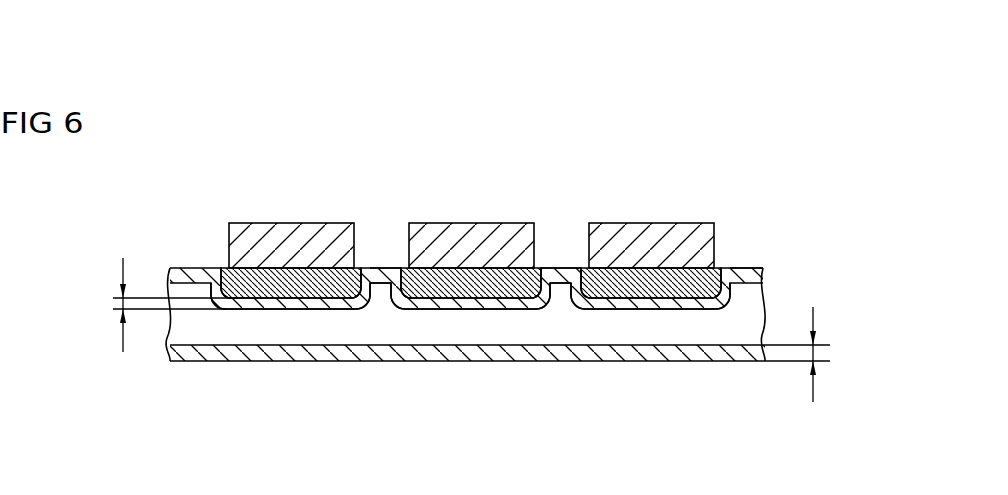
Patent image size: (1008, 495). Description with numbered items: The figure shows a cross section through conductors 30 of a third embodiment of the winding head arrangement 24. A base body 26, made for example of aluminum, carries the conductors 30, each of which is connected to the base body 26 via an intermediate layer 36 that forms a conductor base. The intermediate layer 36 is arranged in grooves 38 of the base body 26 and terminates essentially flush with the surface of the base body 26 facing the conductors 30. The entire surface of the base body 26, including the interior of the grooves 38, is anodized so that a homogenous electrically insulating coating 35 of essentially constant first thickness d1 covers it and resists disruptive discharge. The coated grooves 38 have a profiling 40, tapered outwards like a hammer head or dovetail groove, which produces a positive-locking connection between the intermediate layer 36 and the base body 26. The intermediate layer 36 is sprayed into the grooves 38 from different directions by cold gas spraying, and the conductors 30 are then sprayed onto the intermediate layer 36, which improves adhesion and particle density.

The winding head arrangement 24 is at (764, 250).
The base body 26 is at (768, 290).
The conductors 30 is at (290, 240).
The electrically insulating coating 35 is at (566, 268).
The intermediate layer 36 is at (328, 283).
The grooves 38 is at (271, 294).
The profiling 40 is at (377, 268).
The first thickness d1 is at (114, 301).